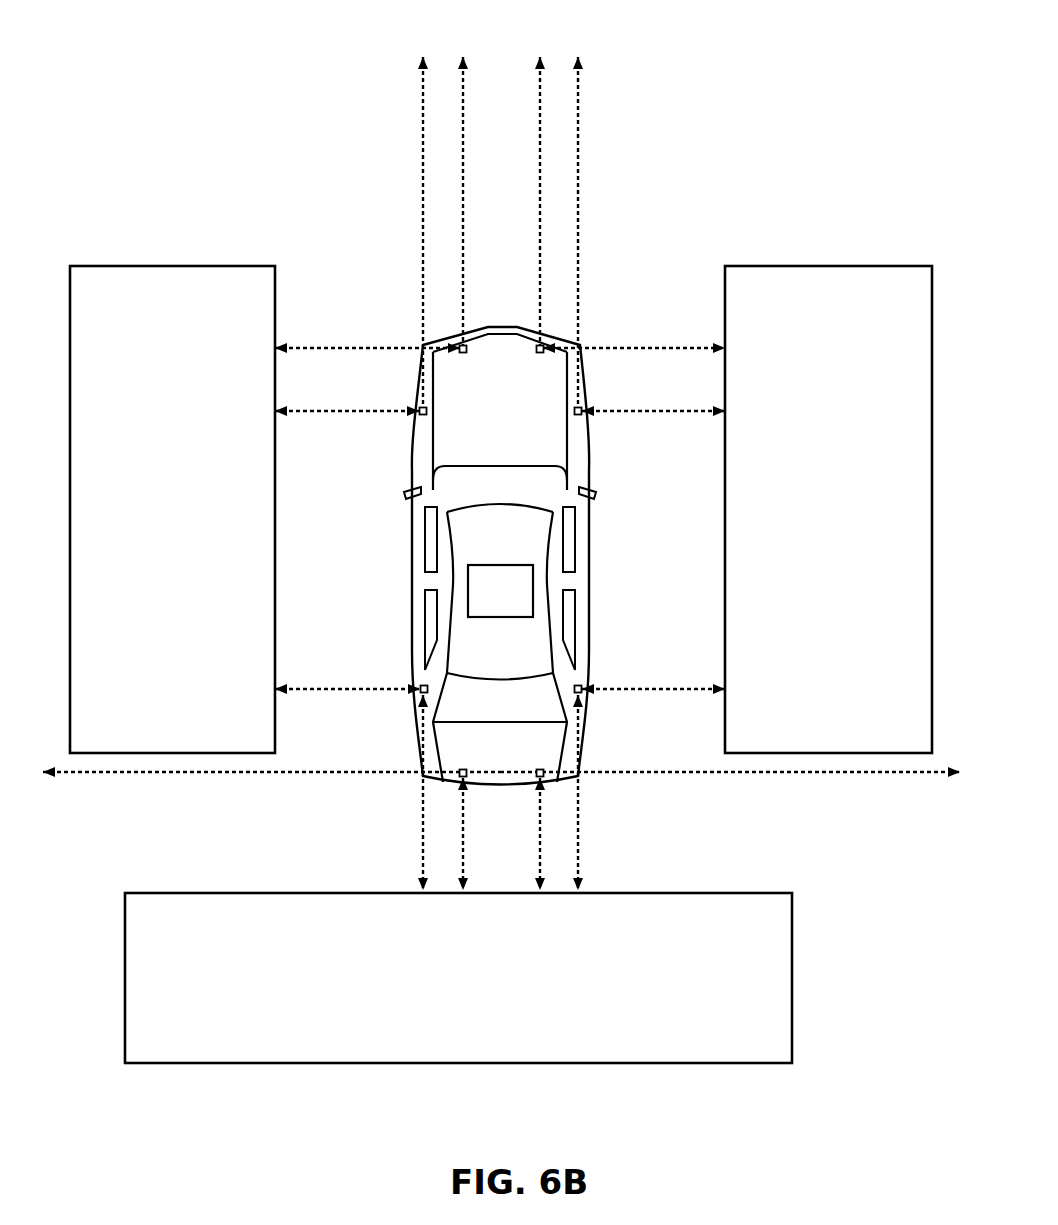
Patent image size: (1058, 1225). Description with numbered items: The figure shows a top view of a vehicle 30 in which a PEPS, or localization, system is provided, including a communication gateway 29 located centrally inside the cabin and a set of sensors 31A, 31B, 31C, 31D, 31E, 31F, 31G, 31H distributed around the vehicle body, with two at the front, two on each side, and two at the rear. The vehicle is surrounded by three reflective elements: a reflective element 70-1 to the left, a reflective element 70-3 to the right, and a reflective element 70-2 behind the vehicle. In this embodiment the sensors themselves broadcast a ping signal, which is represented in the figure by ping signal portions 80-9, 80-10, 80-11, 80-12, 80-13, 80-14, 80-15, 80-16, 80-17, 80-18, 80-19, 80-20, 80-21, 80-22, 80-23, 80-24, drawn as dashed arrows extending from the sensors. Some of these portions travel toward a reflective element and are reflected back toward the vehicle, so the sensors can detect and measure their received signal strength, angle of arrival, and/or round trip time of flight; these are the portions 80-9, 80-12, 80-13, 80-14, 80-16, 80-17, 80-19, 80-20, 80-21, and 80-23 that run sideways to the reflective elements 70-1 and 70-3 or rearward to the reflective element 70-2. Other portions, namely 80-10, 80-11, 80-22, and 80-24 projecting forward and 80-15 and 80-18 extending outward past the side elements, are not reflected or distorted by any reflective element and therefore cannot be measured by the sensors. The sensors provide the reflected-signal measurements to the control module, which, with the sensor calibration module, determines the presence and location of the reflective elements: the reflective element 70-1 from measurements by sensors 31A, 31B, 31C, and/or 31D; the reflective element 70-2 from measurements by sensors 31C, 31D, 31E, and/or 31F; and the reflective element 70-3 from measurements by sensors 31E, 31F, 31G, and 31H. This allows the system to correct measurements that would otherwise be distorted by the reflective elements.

The vehicle 30 is at (590, 558).
The communication gateway 29 is at (510, 617).
The reflective element 70-1 is at (158, 266).
The reflective element 70-2 is at (166, 893).
The reflective element 70-3 is at (813, 266).
The sensor 31A is at (466, 355).
The sensor 31B is at (428, 411).
The sensor 31C is at (418, 692).
The sensor 31D is at (463, 768).
The sensor 31E is at (540, 768).
The sensor 31F is at (574, 691).
The sensor 31G is at (576, 415).
The sensor 31H is at (537, 355).
The ping signal portion 80-9 is at (362, 348).
The ping signal portion 80-10 is at (463, 80).
The ping signal portion 80-11 is at (421, 208).
The ping signal portion 80-12 is at (370, 411).
The ping signal portion 80-13 is at (368, 689).
The ping signal portion 80-14 is at (421, 826).
The ping signal portion 80-15 is at (250, 773).
The ping signal portion 80-16 is at (466, 853).
The ping signal portion 80-17 is at (538, 838).
The ping signal portion 80-18 is at (710, 773).
The ping signal portion 80-19 is at (580, 810).
The ping signal portion 80-20 is at (618, 689).
The ping signal portion 80-21 is at (622, 411).
The ping signal portion 80-22 is at (578, 225).
The ping signal portion 80-23 is at (608, 348).
The ping signal portion 80-24 is at (540, 80).